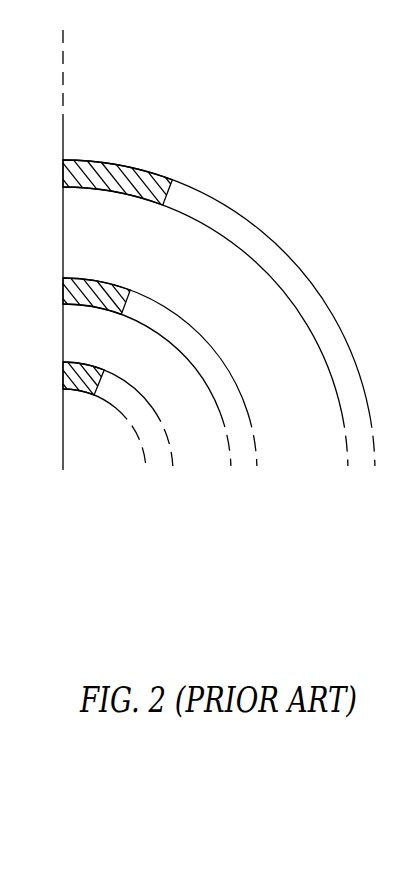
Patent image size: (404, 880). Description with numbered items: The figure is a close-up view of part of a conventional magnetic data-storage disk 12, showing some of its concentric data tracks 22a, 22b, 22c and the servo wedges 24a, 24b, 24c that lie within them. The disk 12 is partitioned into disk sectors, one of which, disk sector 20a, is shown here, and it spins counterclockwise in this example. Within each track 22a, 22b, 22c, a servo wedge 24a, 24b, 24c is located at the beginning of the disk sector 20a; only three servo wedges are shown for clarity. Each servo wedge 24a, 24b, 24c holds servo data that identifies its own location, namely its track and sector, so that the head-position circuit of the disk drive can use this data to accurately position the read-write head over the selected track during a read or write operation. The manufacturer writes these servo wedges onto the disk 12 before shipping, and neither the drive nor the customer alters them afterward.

The magnetic data-storage disk 12 is at (279, 499).
The disk sector 20a is at (304, 112).
The data track 22a is at (144, 378).
The data track 22b is at (234, 352).
The data track 22c is at (318, 238).
The servo wedge 24a is at (75, 362).
The servo wedge 24b is at (78, 279).
The servo wedge 24c is at (97, 162).